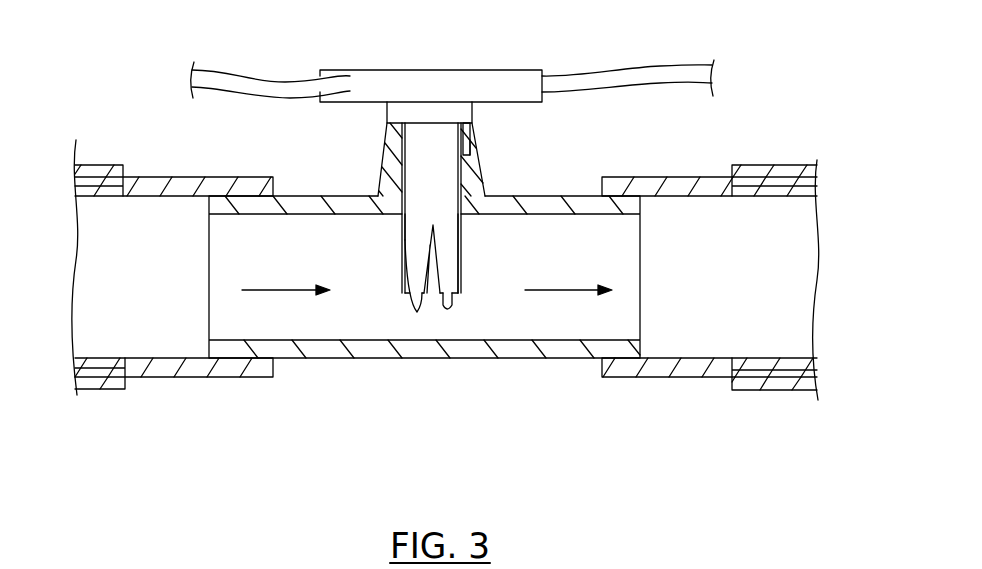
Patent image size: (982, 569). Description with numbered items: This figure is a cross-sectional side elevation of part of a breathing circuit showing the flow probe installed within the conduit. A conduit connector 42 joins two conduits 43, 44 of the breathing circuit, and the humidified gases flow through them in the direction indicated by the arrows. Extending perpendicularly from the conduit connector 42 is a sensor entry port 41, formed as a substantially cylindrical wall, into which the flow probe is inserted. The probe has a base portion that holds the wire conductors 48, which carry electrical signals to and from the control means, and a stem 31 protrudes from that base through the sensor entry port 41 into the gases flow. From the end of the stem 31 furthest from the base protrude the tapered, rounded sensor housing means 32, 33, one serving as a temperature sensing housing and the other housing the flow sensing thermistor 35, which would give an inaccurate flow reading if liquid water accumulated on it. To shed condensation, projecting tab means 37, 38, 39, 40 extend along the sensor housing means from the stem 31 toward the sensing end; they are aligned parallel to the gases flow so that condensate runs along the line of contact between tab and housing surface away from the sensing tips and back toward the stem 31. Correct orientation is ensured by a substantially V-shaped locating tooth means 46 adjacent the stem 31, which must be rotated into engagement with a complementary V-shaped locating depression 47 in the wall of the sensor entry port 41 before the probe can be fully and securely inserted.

The stem 31 is at (431, 208).
The sensor housing means 32 is at (418, 233).
The sensor housing means 33 is at (485, 199).
The flow sensing thermistor 35 is at (450, 310).
The projecting tab means 37 is at (462, 263).
The projecting tab means 38 is at (427, 293).
The projecting tab means 39 is at (440, 295).
The projecting tab means 40 is at (400, 278).
The sensor entry port 41 is at (388, 147).
The conduit connector 42 is at (578, 195).
The conduit 43 is at (140, 176).
The conduit 44 is at (760, 166).
The locating tooth means 46 is at (466, 133).
The locating depression 47 is at (473, 152).
The wire conductors 48 is at (608, 78).